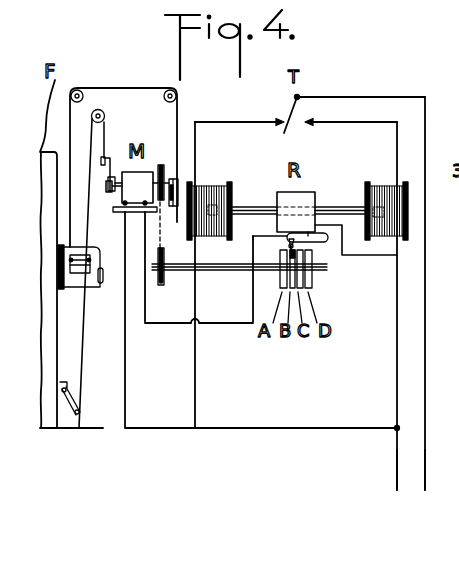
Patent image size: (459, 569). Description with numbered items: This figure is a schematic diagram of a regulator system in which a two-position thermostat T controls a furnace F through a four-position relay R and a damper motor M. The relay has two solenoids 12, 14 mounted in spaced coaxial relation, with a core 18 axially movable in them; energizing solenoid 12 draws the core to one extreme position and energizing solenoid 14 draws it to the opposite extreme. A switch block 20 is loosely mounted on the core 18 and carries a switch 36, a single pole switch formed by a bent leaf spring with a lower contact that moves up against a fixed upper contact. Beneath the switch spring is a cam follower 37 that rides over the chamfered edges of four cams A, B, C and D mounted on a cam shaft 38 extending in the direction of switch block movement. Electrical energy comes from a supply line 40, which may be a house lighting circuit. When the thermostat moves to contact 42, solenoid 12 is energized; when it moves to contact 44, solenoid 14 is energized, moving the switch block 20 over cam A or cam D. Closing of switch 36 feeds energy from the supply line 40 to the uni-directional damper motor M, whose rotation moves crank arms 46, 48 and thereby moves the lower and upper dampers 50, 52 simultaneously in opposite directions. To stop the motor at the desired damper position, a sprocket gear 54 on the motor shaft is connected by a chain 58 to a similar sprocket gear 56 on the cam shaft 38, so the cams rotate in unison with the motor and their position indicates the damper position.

The solenoid 12 is at (212, 183).
The solenoid 14 is at (383, 182).
The core 18 is at (248, 209).
The switch block 20 is at (298, 193).
The switch 36 is at (327, 244).
The cam follower 37 is at (284, 249).
The cam shaft 38 is at (220, 272).
The supply line 40 is at (408, 485).
The contact 42 is at (282, 117).
The contact 44 is at (312, 117).
The crank arm 46 is at (112, 161).
The crank arm 48 is at (178, 186).
The lower damper 50 is at (78, 398).
The upper damper 52 is at (75, 262).
The sprocket gear 54 is at (162, 164).
The sprocket gear 56 is at (157, 325).
The chain 58 is at (165, 240).